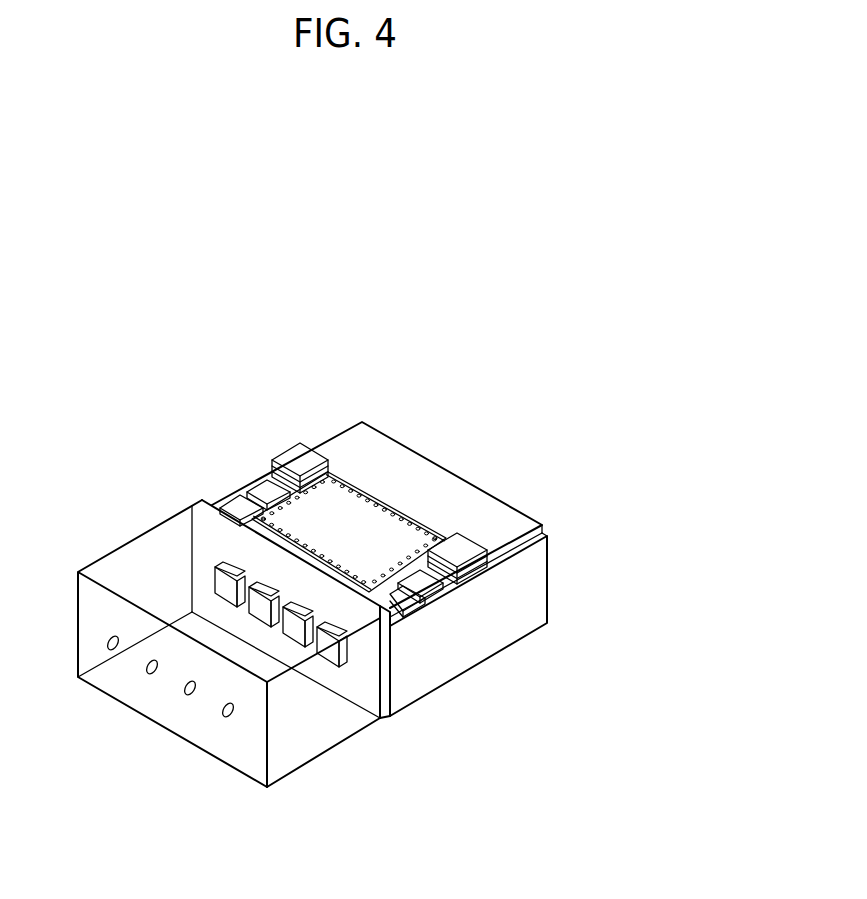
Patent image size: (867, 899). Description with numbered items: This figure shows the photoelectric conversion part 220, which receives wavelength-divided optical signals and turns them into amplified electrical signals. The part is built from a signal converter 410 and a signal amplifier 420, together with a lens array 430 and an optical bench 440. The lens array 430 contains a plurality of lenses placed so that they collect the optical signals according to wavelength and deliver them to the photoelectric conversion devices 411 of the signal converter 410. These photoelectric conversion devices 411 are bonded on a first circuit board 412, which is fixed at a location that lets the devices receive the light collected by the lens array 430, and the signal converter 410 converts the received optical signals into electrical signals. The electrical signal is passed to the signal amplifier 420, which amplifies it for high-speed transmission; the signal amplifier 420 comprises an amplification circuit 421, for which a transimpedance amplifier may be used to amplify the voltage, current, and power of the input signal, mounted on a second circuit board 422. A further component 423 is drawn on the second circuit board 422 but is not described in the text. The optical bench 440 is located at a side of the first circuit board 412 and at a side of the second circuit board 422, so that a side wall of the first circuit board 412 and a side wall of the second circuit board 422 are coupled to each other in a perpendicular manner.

The photoelectric conversion part 220 is at (489, 311).
The signal converter 410 is at (517, 817).
The photoelectric conversion devices 411 is at (335, 657).
The first circuit board 412 is at (385, 692).
The signal amplifier 420 is at (453, 358).
The amplification circuit 421 is at (342, 505).
The second circuit board 422 is at (430, 488).
The electronic element 423 is at (293, 460).
The lens array 430 is at (128, 557).
The optical bench 440 is at (535, 587).